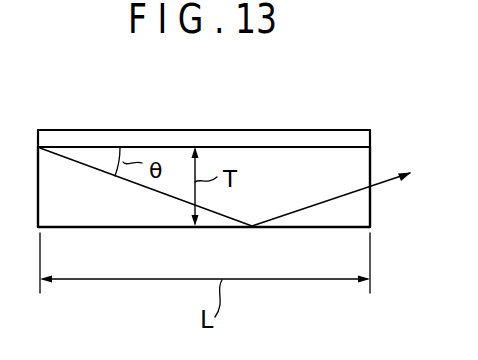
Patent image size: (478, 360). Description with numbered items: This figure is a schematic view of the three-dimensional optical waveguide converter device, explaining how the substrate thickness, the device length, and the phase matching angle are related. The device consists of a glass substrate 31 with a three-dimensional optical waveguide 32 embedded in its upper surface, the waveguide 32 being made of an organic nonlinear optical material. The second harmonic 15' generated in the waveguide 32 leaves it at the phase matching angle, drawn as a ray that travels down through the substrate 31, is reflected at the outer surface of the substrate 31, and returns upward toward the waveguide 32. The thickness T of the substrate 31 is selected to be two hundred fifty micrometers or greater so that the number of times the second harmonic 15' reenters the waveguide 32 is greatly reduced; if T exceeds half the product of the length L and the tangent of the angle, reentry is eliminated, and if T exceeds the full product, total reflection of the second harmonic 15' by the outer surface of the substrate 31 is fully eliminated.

The three-dimensional optical waveguide 32 is at (90, 138).
The glass substrate 31 is at (103, 213).
The second harmonic 15' is at (225, 187).